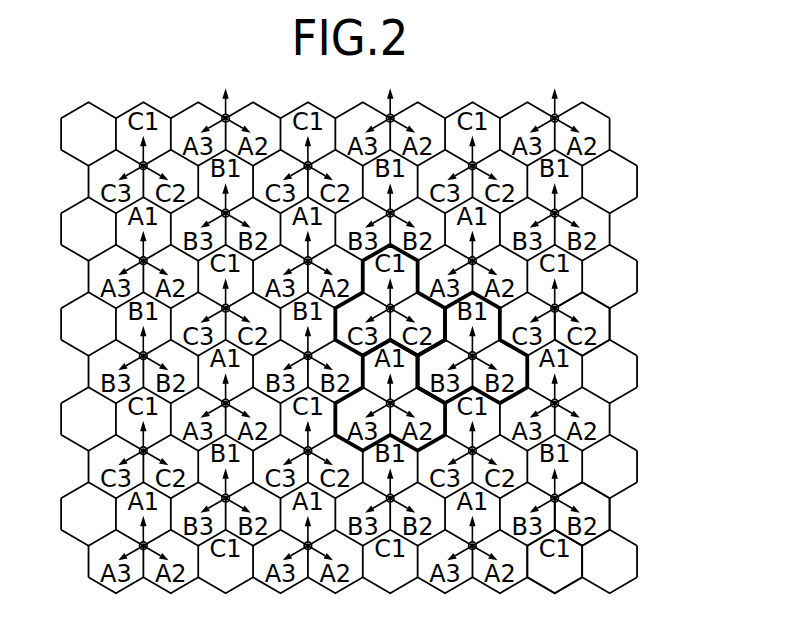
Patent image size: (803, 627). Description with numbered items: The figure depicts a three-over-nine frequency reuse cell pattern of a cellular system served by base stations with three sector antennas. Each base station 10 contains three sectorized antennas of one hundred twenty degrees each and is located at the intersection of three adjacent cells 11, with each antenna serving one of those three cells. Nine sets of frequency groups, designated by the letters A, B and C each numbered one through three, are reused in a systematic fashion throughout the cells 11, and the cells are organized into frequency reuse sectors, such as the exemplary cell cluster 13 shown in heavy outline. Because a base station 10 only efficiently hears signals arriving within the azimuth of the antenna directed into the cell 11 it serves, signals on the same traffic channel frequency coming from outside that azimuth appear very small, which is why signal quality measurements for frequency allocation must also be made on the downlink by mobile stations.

The base station 10 is at (560, 309).
The cell 11 is at (612, 329).
The cell cluster 13 is at (498, 309).